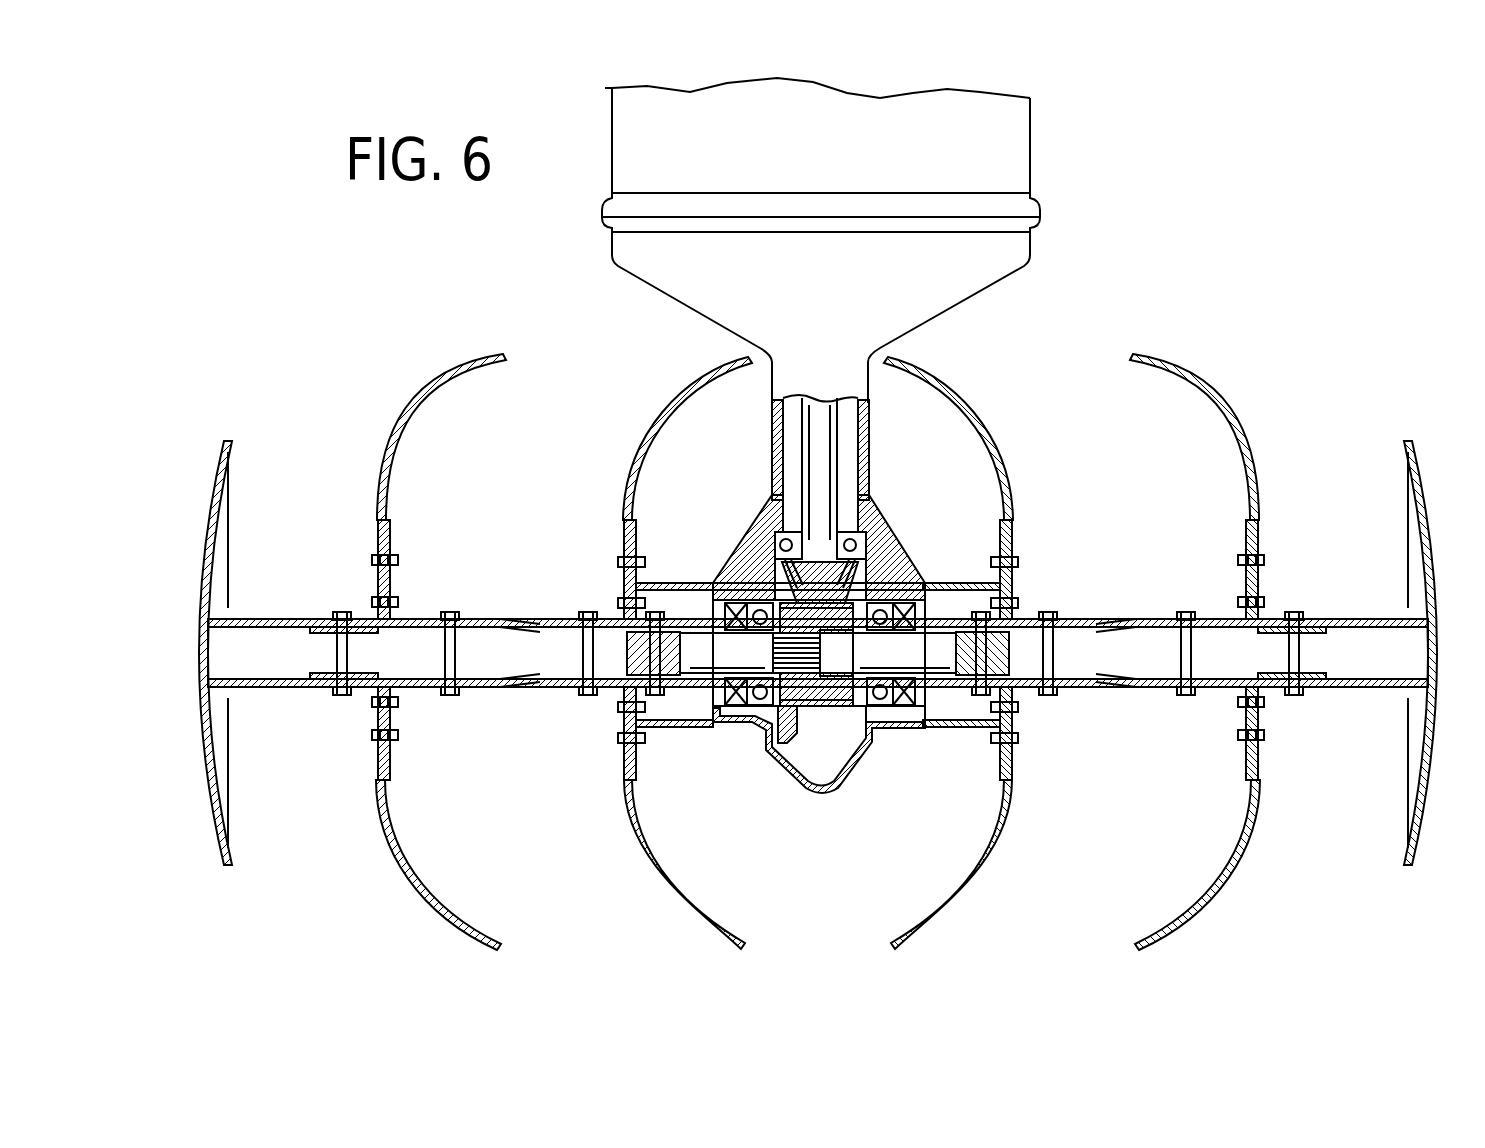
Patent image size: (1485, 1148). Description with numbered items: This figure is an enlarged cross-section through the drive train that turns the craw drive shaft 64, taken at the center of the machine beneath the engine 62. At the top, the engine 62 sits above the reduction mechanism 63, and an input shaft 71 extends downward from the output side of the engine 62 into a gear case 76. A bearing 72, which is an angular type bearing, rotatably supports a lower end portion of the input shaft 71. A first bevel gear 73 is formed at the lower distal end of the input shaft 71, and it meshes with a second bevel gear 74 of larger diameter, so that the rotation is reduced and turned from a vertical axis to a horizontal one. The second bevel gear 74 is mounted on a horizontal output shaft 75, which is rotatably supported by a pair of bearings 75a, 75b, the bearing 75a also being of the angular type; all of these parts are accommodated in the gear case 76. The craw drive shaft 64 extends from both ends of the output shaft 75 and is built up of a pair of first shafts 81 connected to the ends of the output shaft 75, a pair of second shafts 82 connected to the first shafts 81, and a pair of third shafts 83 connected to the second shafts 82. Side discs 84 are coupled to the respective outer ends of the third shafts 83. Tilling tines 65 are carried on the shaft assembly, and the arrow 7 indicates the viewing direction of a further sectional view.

The engine 62 is at (1064, 173).
The reduction mechanism 63 is at (700, 533).
The craw drive shaft 64 is at (575, 500).
The tilling tine 65 is at (410, 425).
The input shaft 71 is at (838, 468).
The bearing 72 is at (872, 506).
The first bevel gear 73 is at (857, 582).
The second bevel gear 74 is at (797, 737).
The output shaft 75 is at (697, 657).
The bearing 75a is at (753, 753).
The bearing 75b is at (865, 708).
The gear case 76 is at (893, 744).
The section view direction 7 is at (832, 832).
The first shafts 81 is at (683, 625).
The second shafts 82 is at (522, 617).
The third shafts 83 is at (283, 612).
The side discs 84 is at (228, 530).